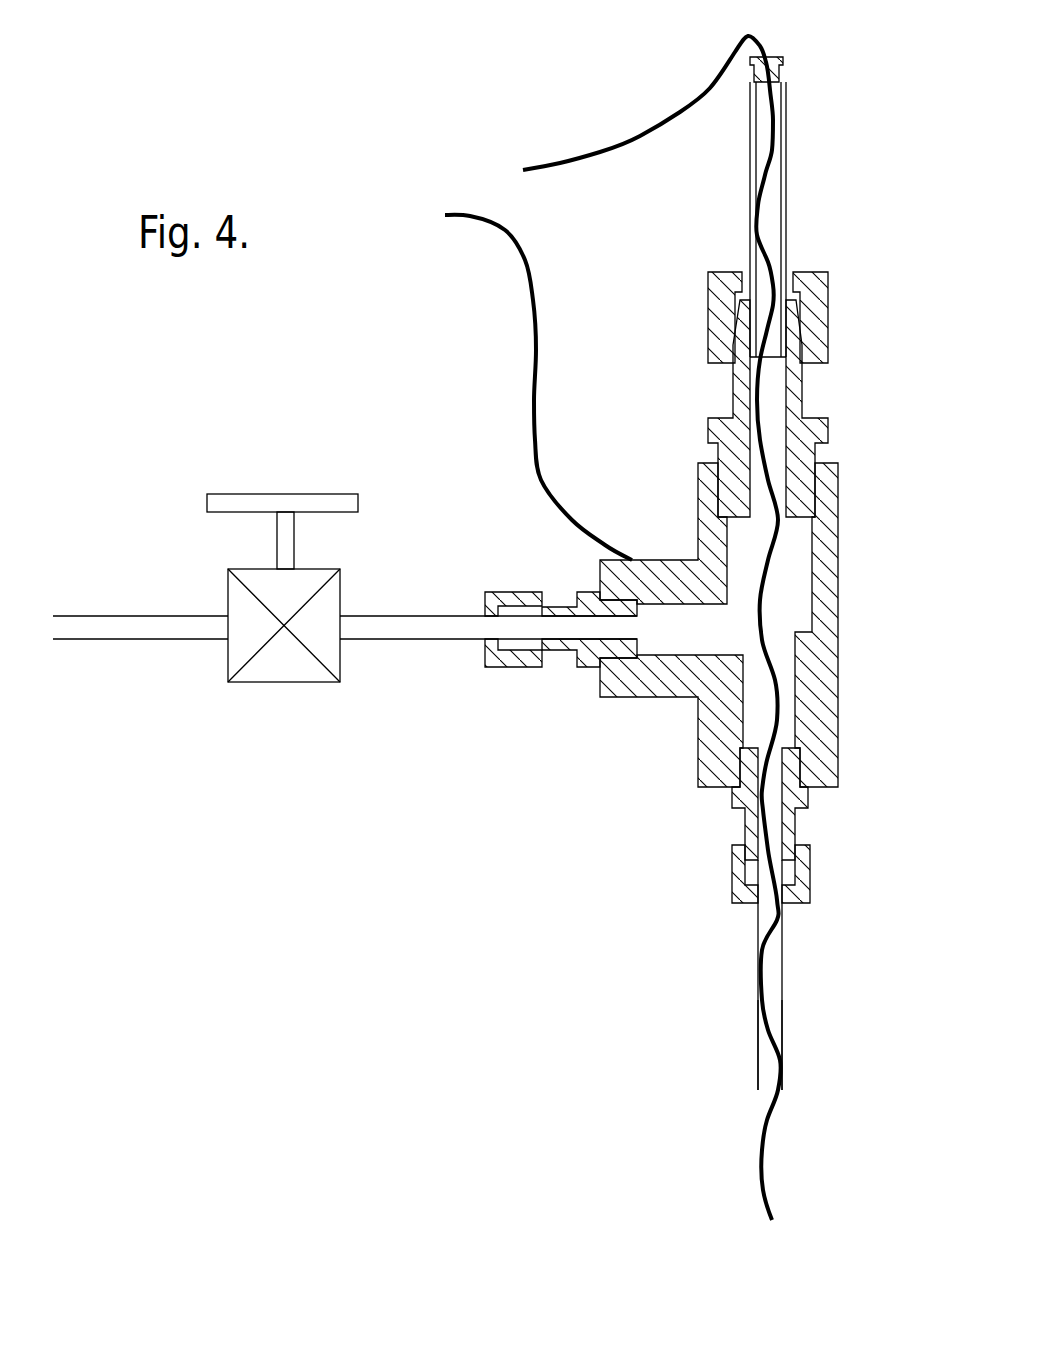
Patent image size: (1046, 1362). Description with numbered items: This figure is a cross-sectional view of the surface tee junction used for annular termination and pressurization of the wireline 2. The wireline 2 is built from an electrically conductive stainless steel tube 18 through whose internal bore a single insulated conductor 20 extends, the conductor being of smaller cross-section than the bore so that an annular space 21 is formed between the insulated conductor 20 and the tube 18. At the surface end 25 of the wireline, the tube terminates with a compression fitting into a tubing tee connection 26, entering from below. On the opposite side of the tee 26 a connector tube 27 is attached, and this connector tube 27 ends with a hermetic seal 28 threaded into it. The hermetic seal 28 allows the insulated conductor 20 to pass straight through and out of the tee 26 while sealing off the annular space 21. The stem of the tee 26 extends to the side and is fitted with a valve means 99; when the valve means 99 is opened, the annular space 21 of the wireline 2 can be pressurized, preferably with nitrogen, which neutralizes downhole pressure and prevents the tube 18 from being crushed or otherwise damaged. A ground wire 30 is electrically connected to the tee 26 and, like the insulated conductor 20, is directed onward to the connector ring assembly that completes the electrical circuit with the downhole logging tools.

The wireline 2 is at (758, 1016).
The electrically conductive tube 18 is at (758, 1045).
The insulated conductor 20 is at (549, 170).
The annular space 21 is at (782, 984).
The surface end 25 is at (783, 940).
The tubing tee connection 26 is at (833, 620).
The connector tube 27 is at (786, 192).
The hermetic seal 28 is at (785, 58).
The ground wire 30 is at (467, 213).
The valve means 99 is at (276, 682).